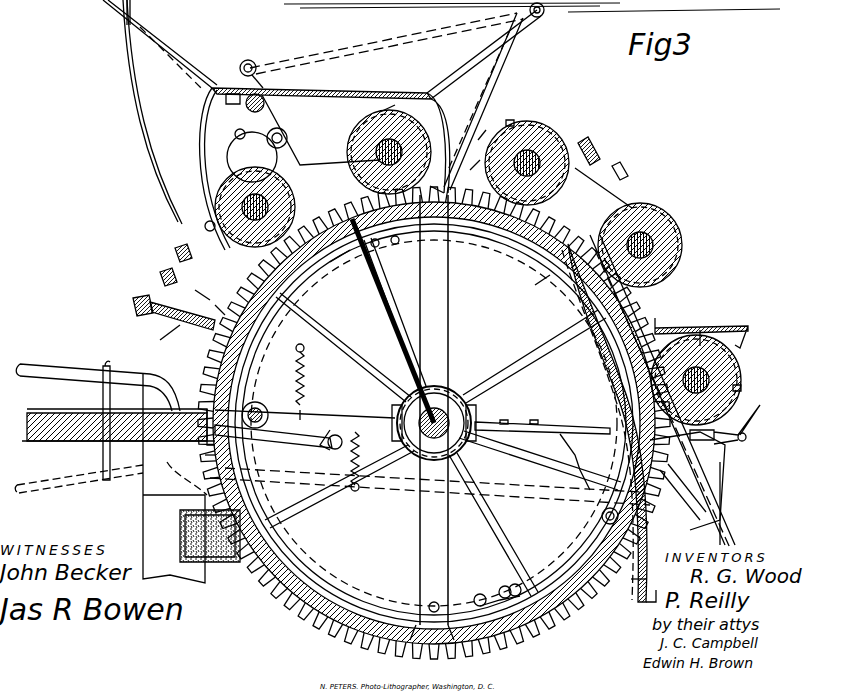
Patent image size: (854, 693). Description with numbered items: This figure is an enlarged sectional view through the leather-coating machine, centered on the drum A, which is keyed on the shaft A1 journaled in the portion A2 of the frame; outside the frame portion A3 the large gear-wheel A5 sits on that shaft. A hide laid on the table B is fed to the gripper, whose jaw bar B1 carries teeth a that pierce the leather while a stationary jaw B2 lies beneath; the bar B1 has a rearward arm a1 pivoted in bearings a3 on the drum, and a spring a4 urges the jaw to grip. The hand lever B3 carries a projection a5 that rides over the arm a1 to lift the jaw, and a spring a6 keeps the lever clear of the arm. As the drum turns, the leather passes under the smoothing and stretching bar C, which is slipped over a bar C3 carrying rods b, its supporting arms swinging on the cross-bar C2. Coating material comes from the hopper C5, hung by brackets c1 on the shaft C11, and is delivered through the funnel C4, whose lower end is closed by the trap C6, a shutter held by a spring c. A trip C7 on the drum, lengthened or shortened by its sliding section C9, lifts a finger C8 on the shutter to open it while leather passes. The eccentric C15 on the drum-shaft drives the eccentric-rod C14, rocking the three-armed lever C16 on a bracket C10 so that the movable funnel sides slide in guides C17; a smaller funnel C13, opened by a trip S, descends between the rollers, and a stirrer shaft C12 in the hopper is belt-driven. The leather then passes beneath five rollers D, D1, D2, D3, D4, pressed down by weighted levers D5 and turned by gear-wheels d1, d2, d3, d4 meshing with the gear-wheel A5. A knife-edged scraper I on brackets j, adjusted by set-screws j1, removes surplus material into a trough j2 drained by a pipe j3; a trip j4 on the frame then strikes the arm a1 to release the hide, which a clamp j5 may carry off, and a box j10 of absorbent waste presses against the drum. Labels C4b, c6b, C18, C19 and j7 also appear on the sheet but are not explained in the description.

The cylinder or drum A is at (434, 423).
The drum-shaft A1 is at (447, 395).
The frame portion A2 is at (430, 417).
The frame portion A3 is at (155, 472).
The gear-wheel A5 is at (450, 423).
The table B is at (117, 414).
The gripper-bar B1 is at (196, 419).
The stationary jaw B2 is at (269, 424).
The lever B3 is at (85, 370).
The smoothing and stretching bar C is at (210, 212).
The cross-bar C2 is at (175, 250).
The bar C3 is at (160, 322).
The funnel or chute C4 is at (286, 125).
The connecting rod C4b is at (484, 54).
The hopper C5 is at (386, 42).
The trap C6 is at (468, 160).
The pin c6b is at (200, 285).
The trip C7 is at (125, 12).
The finger C8 is at (405, 262).
The sliding section C9 is at (240, 128).
The bracket C10 is at (272, 131).
The rotary shaft C11 is at (235, 132).
The stirrer shaft C12 is at (168, 50).
The funnel C13 is at (454, 101).
The eccentric-rod C14 is at (380, 303).
The eccentric C15 is at (434, 398).
The three-armed lever C16 is at (243, 72).
The guides C17 is at (538, 18).
The bracket C18 is at (453, 139).
The cam rollers C19 is at (429, 455).
The roller D is at (225, 197).
The roller D1 is at (372, 122).
The roller D2 is at (548, 128).
The roller D3 is at (668, 210).
The roller D4 is at (740, 370).
The weighted levers D5 is at (240, 150).
The gear-wheel d1 is at (400, 100).
The gear-wheel d2 is at (512, 120).
The gear-wheel d3 is at (645, 205).
The gear-wheel d4 is at (740, 392).
The cleaner or scraper I is at (701, 325).
The trip S is at (536, 285).
The prongs or teeth a is at (215, 445).
The arm a1 is at (300, 408).
The bearings a3 is at (286, 374).
The spring a4 is at (305, 398).
The projection a5 is at (330, 410).
The spring a6 is at (355, 444).
The rods b is at (167, 340).
The spring c is at (488, 127).
The brackets c1 is at (216, 302).
The arms or brackets j is at (600, 325).
The set-screws j1 is at (680, 492).
The tray or trough j2 is at (735, 325).
The pipe j3 is at (684, 488).
The trip j4 is at (560, 432).
The clamp j5 is at (731, 424).
The lever j7 is at (655, 578).
The box j10 is at (215, 560).